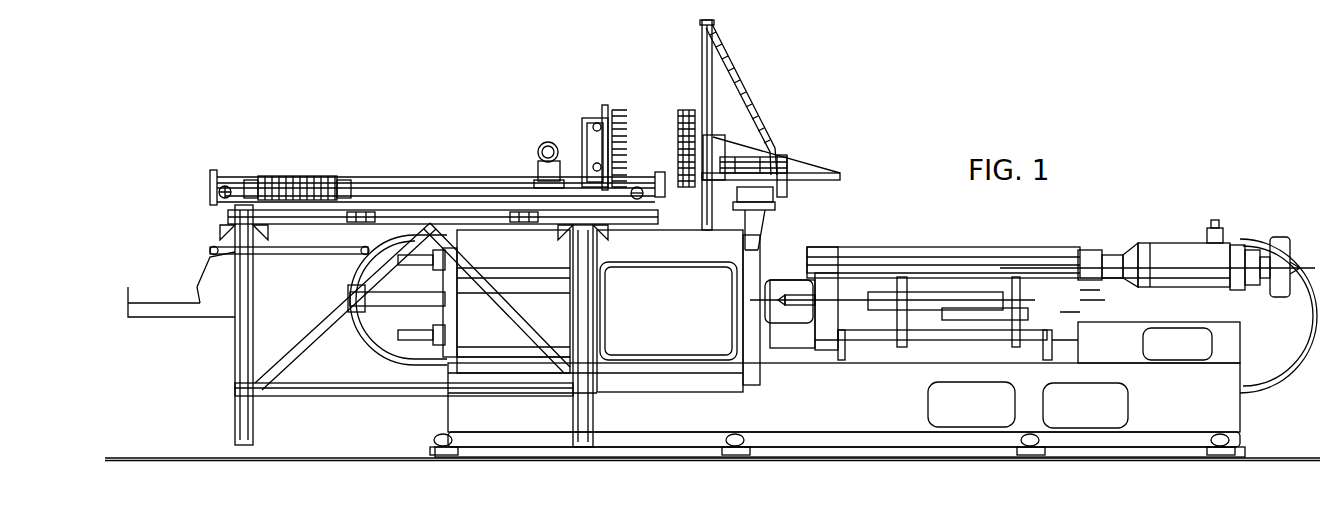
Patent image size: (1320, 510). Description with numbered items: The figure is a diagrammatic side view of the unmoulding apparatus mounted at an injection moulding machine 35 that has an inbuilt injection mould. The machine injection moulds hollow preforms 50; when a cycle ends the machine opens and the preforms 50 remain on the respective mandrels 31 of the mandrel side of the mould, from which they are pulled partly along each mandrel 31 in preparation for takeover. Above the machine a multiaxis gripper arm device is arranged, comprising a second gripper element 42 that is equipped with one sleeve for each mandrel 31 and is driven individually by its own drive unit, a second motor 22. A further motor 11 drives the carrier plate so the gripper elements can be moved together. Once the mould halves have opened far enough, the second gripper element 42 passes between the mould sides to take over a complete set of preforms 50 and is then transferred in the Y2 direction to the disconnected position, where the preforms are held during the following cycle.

The further motor 11 is at (799, 197).
The second motor 22 is at (750, 157).
The mandrel 31 is at (617, 110).
The injection moulding machine 35 is at (816, 416).
The second gripper element 42 is at (690, 96).
The preform 50 is at (678, 110).
The Y2 direction Y2 is at (708, 72).